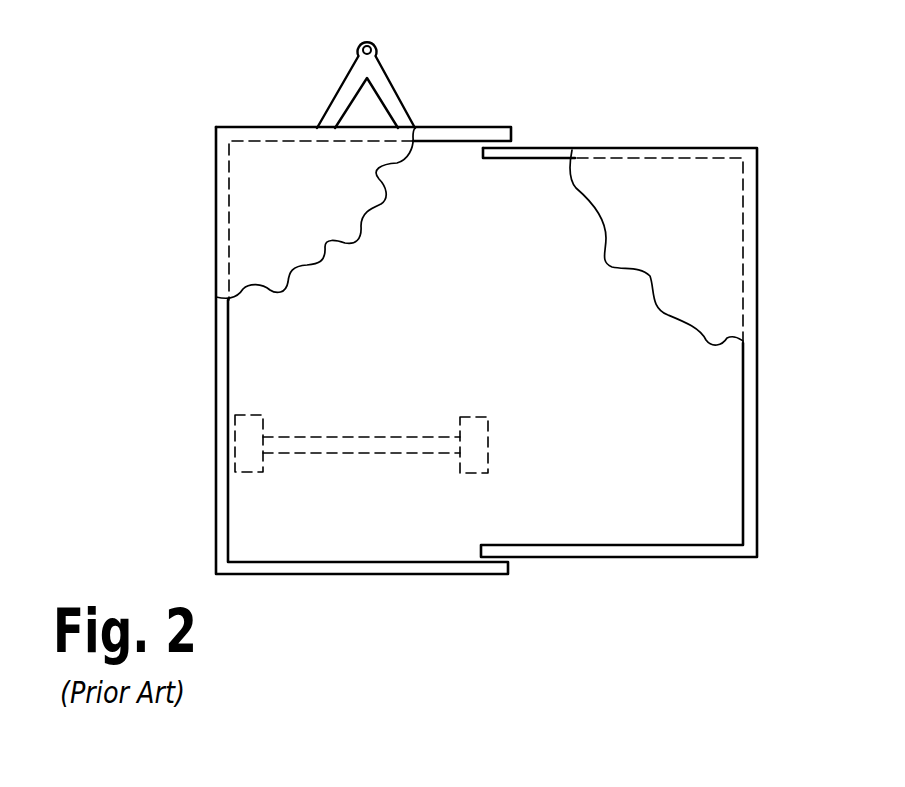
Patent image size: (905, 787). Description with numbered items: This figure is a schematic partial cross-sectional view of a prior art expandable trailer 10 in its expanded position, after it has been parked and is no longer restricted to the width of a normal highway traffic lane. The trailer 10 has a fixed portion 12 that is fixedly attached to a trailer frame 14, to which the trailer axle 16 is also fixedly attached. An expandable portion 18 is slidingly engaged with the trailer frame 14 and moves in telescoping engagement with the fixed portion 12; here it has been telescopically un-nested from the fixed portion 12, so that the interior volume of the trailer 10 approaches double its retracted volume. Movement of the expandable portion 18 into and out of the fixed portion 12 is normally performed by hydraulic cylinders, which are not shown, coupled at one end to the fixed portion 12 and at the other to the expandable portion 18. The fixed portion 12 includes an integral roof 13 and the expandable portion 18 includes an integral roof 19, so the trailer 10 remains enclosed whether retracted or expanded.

The trailer 10 is at (169, 108).
The fixed portion 12 is at (215, 263).
The integral roof 13 is at (289, 197).
The trailer frame 14 is at (393, 90).
The trailer axle 16 is at (287, 455).
The expandable portion 18 is at (757, 246).
The integral roof 19 is at (687, 233).